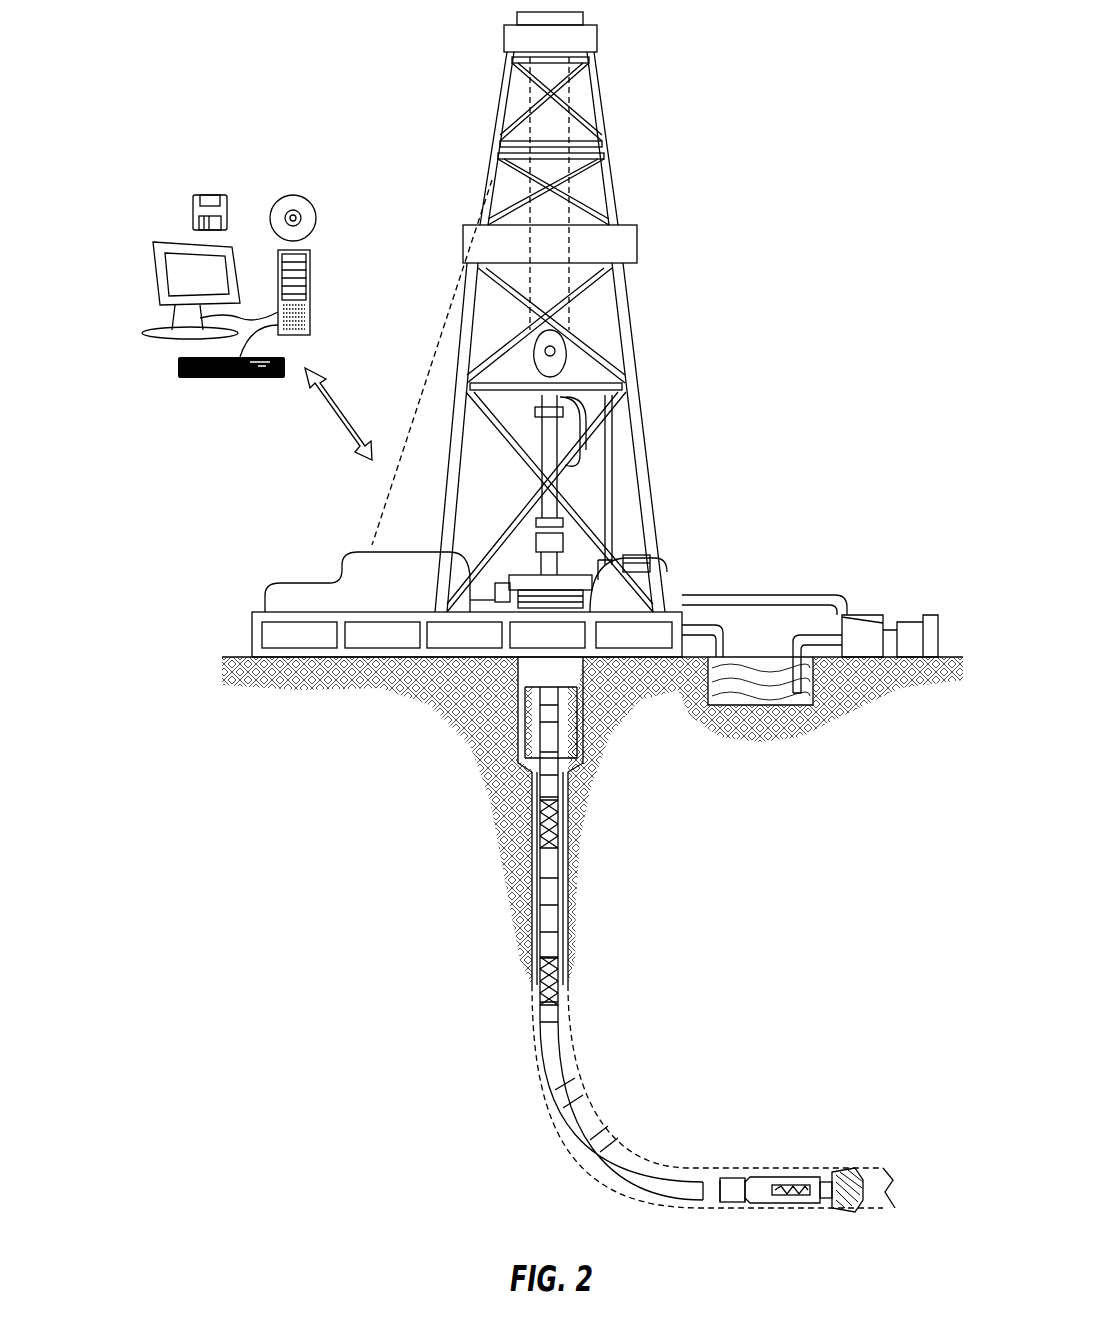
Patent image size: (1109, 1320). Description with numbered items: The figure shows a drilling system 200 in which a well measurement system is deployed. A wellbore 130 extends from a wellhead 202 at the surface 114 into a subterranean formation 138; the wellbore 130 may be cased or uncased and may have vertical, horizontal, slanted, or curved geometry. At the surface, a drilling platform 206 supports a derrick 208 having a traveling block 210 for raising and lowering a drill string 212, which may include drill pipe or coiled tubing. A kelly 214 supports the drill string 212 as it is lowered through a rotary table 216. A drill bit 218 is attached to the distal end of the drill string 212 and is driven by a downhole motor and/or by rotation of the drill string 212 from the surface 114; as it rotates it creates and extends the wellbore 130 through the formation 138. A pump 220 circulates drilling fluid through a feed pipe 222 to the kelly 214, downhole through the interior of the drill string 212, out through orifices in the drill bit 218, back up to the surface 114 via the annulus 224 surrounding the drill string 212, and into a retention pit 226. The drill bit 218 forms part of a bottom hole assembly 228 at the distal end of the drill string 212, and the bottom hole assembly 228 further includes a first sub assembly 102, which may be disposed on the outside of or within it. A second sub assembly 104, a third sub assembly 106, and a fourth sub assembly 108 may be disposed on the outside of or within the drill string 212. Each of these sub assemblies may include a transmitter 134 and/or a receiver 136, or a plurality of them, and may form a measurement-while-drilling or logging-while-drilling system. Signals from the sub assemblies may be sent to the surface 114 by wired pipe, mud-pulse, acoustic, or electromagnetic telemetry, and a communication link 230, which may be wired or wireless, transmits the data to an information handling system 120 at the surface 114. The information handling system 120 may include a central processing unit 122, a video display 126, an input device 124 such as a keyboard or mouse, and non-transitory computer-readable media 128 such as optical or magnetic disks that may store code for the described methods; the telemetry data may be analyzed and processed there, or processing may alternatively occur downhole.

The drilling system 200 is at (870, 111).
The information handling system 120 is at (158, 182).
The non-transitory computer-readable media 128 is at (289, 196).
The video display 126 is at (158, 283).
The central processing unit 122 is at (310, 268).
The input device 124 is at (185, 378).
The communication link 230 is at (325, 420).
The derrick 208 is at (610, 166).
The traveling block 210 is at (570, 355).
The kelly 214 is at (553, 437).
The rotary table 216 is at (587, 573).
The wellhead 202 is at (598, 601).
The drilling platform 206 is at (252, 638).
The feed pipe 222 is at (790, 596).
The pump 220 is at (872, 613).
The surface 114 is at (945, 657).
The retention pit 226 is at (755, 690).
The subterranean formation 138 is at (798, 952).
The annulus 224 is at (530, 860).
The fourth sub assembly 108 is at (545, 826).
The third sub assembly 106 is at (552, 982).
The wellbore 130 is at (590, 886).
The drill string 212 is at (565, 832).
The second sub assembly 104 is at (583, 1133).
The transmitter 134 is at (556, 812).
The receiver 136 is at (560, 842).
The bottom hole assembly 228 is at (755, 1177).
The first sub assembly 102 is at (790, 1200).
The drill bit 218 is at (852, 1172).